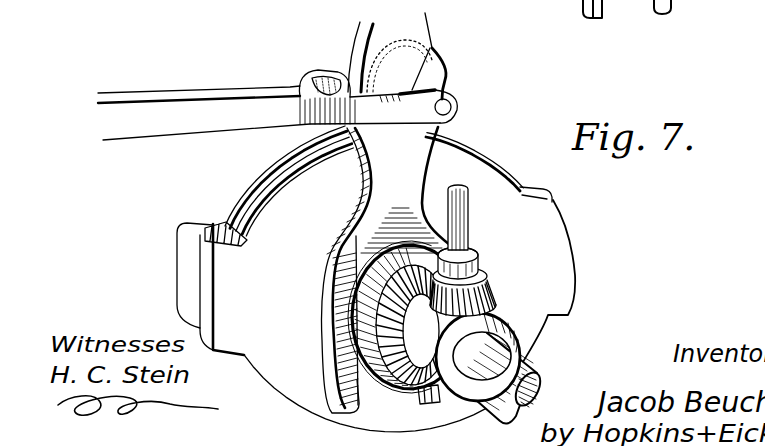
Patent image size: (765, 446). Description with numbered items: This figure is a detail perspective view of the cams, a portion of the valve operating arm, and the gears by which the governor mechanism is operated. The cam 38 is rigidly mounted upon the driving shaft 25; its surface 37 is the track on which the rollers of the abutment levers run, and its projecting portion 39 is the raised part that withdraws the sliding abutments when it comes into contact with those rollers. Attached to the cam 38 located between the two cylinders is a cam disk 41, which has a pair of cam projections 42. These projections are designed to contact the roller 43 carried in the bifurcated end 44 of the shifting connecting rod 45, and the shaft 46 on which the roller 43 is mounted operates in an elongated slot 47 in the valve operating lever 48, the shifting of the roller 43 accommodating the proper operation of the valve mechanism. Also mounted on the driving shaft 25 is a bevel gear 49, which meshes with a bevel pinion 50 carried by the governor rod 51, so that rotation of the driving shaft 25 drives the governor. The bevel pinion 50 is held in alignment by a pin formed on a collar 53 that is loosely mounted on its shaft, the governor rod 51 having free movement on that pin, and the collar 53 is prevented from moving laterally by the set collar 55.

The driving shaft 25 is at (528, 367).
The surface of the cam 37 is at (282, 147).
The cam 38 is at (238, 193).
The projecting portion 39 is at (178, 237).
The cam disk 41 is at (306, 219).
The cam projection 42 is at (222, 262).
The roller 43 is at (447, 78).
The bifurcated end 44 is at (328, 76).
The shifting connecting rod 45 is at (277, 113).
The shaft 46 is at (452, 107).
The elongated slot 47 is at (430, 48).
The valve operating lever 48 is at (398, 35).
The bevel gear 49 is at (497, 291).
The bevel pinion 50 is at (480, 262).
The governor rod 51 is at (469, 216).
The collar 53 is at (406, 363).
The set collar 55 is at (503, 332).